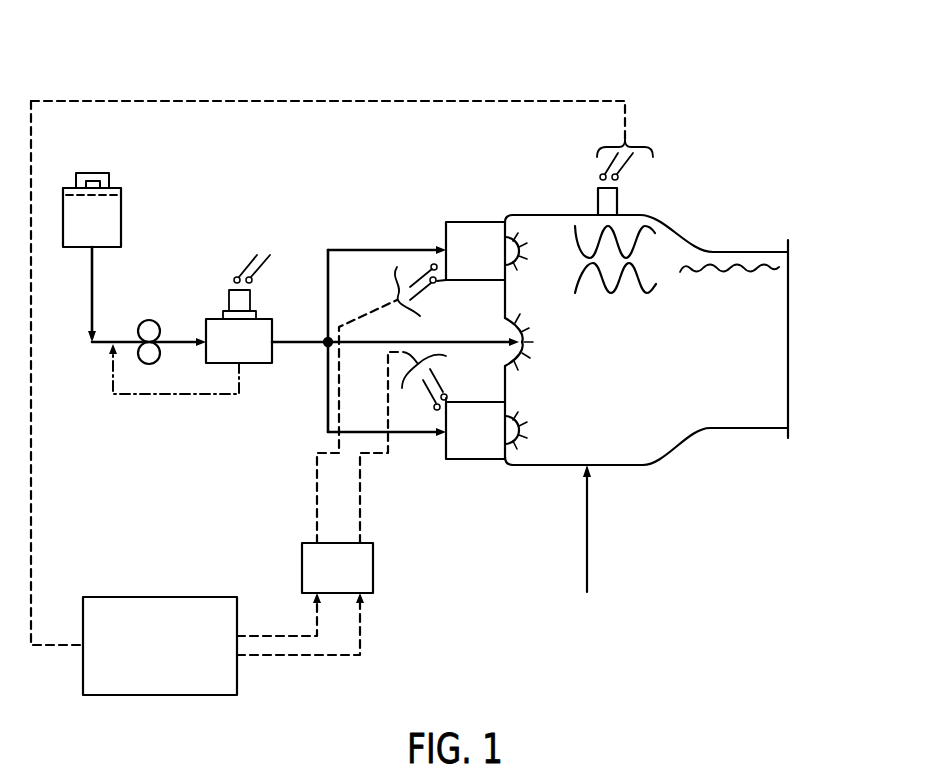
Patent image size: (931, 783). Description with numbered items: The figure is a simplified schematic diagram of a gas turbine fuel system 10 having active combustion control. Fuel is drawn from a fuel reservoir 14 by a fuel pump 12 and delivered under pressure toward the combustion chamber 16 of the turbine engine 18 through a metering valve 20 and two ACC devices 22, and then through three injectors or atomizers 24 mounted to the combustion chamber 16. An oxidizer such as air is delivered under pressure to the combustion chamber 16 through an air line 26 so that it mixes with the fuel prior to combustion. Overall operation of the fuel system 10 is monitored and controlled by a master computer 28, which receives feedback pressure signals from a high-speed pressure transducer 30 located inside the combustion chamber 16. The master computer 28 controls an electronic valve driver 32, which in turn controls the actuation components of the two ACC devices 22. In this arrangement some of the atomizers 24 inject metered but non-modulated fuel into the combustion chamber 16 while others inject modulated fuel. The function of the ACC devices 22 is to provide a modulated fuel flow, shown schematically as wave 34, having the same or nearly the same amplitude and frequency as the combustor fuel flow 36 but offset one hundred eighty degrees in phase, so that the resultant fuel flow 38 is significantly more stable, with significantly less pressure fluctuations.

The gas turbine fuel system 10 is at (714, 59).
The fuel pump 12 is at (152, 318).
The fuel reservoir 14 is at (121, 217).
The combustion chamber 16 is at (707, 386).
The turbine engine 18 is at (679, 237).
The metering valve 20 is at (256, 363).
The ACC device 22 is at (476, 222).
The atomizer 24 is at (529, 228).
The air line 26 is at (589, 534).
The master computer 28 is at (168, 659).
The high-speed pressure transducer 30 is at (598, 200).
The electronic valve driver 32 is at (350, 582).
The modulated fuel flow wave 34 is at (582, 243).
The combustor fuel flow 36 is at (644, 296).
The resultant fuel flow 38 is at (730, 278).